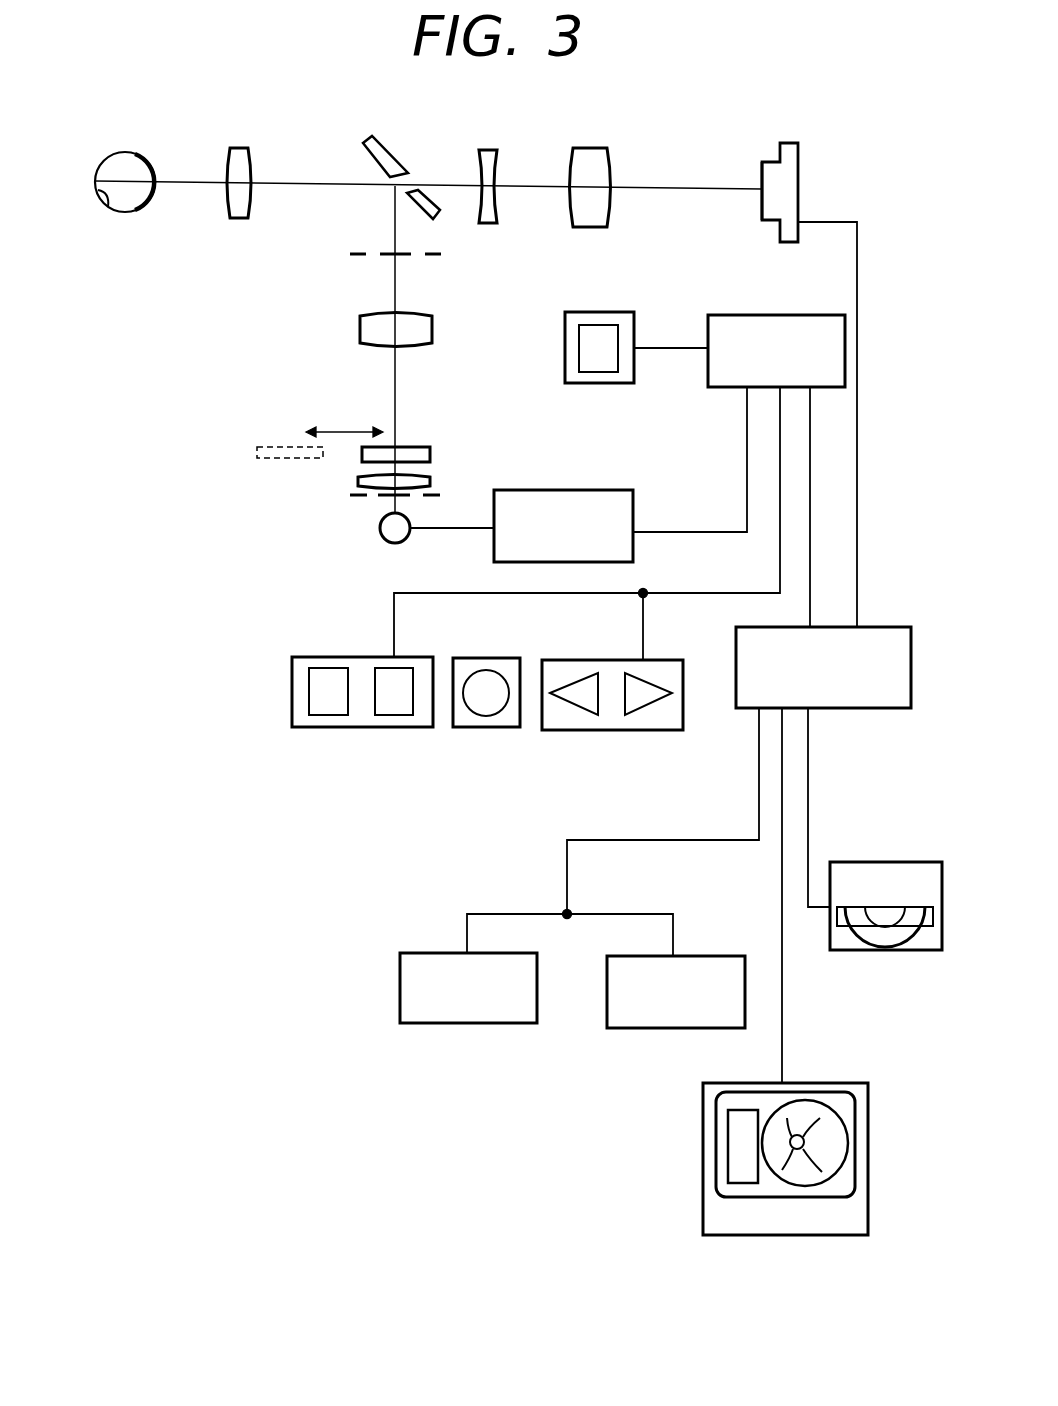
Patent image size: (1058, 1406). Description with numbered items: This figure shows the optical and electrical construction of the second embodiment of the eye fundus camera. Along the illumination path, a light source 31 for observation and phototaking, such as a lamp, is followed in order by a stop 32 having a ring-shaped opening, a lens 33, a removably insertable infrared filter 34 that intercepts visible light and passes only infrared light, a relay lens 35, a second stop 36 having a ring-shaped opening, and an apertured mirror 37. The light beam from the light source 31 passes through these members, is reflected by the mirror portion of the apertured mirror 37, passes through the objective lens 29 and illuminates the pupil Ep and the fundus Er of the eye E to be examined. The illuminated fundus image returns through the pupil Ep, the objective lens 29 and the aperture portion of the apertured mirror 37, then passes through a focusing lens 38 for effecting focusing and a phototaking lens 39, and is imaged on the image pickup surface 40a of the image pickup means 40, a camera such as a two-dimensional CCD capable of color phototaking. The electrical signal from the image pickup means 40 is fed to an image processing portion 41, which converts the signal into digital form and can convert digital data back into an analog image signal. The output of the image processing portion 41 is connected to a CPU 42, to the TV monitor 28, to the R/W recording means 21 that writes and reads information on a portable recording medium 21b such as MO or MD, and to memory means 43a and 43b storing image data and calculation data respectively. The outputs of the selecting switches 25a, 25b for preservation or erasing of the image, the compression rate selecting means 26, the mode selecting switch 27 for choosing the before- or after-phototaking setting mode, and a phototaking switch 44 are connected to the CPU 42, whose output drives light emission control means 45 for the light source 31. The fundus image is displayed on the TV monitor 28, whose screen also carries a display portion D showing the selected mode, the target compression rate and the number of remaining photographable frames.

The eye to be examined E is at (108, 152).
The pupil Ep is at (155, 175).
The fundus Er is at (106, 206).
The objective lens 29 is at (244, 148).
The apertured mirror 37 is at (388, 148).
The focusing lens 38 is at (490, 150).
The phototaking lens 39 is at (600, 148).
The image pickup means 40 is at (796, 143).
The image pickup surface 40a is at (760, 200).
The stop 36 is at (352, 256).
The relay lens 35 is at (358, 325).
The infrared filter 34 is at (364, 462).
The lens 33 is at (432, 478).
The stop 32 is at (355, 497).
The light source for observation and phototaking 31 is at (385, 541).
The phototaking switch 44 is at (612, 312).
The CPU 42 is at (795, 315).
The light emission control means 45 is at (603, 490).
The image processing portion 41 is at (872, 627).
The selecting switch 25a is at (318, 727).
The selecting switch 25b is at (378, 727).
The mode selecting switch 27 is at (475, 727).
The compression rate selecting means 26 is at (553, 732).
The memory means 43a is at (420, 1024).
The memory means 43b is at (627, 1028).
The R/W recording means 21 is at (906, 862).
The recording medium 21b is at (895, 945).
The TV monitor 28 is at (840, 1085).
The display portion D is at (728, 1168).